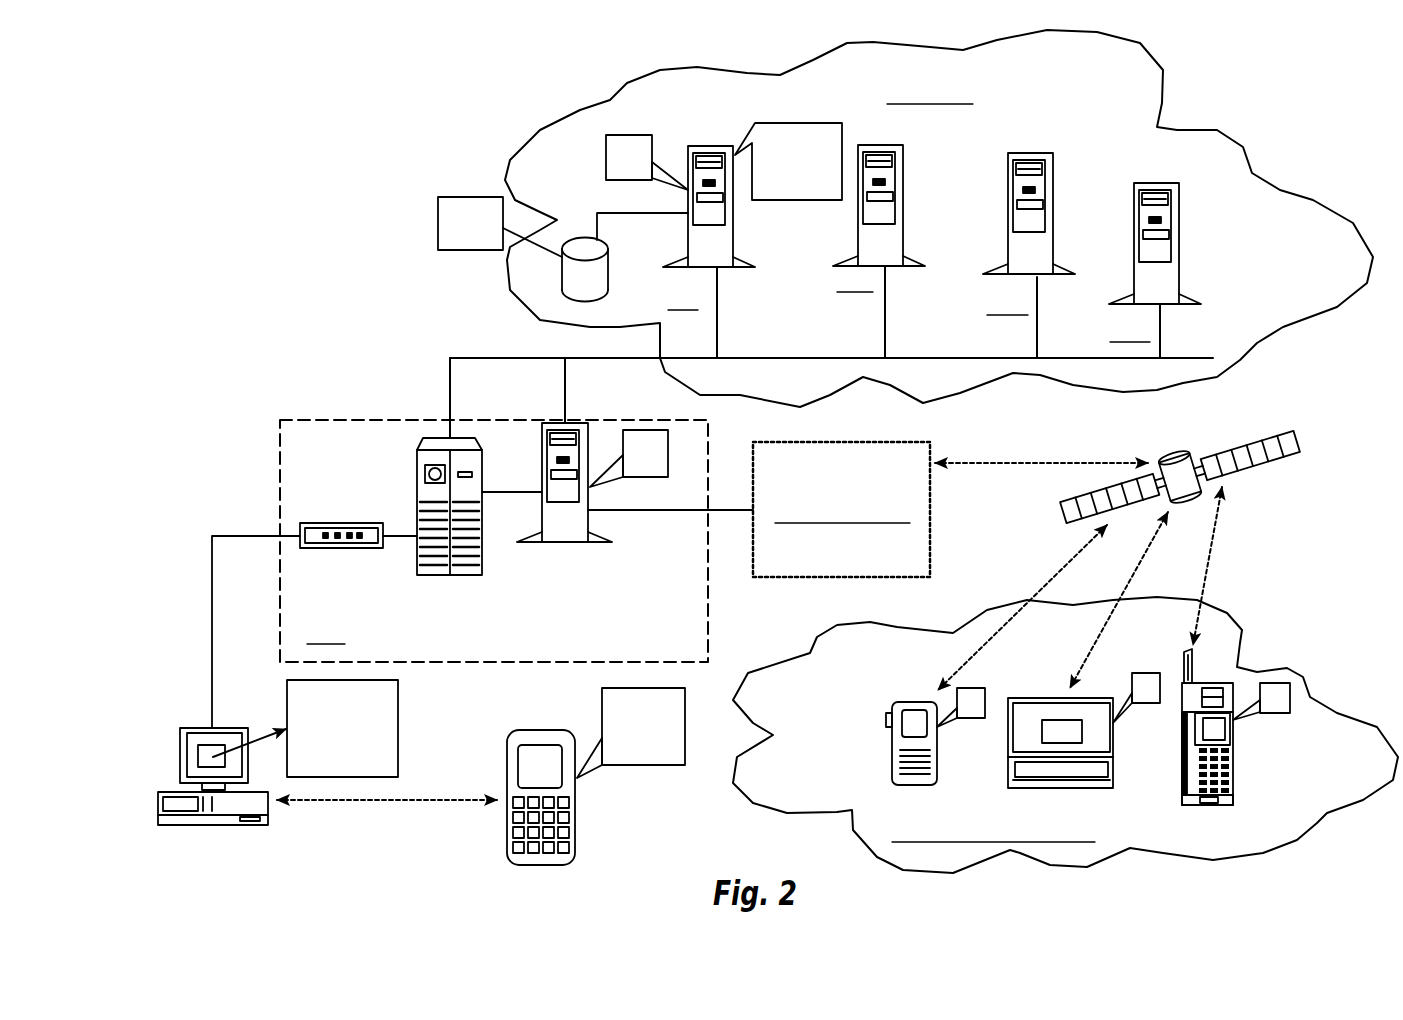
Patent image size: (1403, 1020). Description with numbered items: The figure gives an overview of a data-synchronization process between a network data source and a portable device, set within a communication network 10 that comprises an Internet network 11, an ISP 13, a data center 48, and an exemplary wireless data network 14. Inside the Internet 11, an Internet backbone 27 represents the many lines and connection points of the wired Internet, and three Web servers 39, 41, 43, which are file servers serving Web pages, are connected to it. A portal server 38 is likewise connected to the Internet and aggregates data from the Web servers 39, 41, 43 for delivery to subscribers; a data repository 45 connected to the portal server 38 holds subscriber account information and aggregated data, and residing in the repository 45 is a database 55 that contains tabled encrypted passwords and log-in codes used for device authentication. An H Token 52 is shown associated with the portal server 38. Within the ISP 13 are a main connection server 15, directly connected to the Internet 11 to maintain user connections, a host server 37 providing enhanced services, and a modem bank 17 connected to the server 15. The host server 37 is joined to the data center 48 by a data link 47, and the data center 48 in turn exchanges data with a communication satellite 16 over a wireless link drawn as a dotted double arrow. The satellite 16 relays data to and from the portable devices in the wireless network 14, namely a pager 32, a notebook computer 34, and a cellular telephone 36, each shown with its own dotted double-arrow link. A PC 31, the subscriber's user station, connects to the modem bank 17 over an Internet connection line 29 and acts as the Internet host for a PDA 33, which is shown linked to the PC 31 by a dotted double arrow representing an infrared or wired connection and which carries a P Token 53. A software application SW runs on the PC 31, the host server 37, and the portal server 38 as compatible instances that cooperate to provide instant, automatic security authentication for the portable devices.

The communication network 10 is at (350, 215).
The Internet network 11 is at (1252, 152).
The ISP 13 is at (280, 505).
The wireless data network 14 is at (1340, 662).
The main connection server 15 is at (417, 497).
The communication satellite 16 is at (1303, 441).
The modem bank 17 is at (363, 523).
The Internet backbone 27 is at (817, 357).
The Internet connection line 29 is at (212, 653).
The PC 31 is at (180, 755).
The pager 32 is at (892, 760).
The PDA 33 is at (575, 803).
The notebook computer 34 is at (1008, 727).
The cellular telephone 36 is at (1233, 733).
The host server 37 is at (542, 478).
The portal server 38 is at (688, 237).
The Web server 39 is at (903, 172).
The Web server 41 is at (1008, 233).
The Web server 43 is at (1180, 238).
The data repository 45 is at (562, 272).
The data link 47 is at (697, 510).
The data center 48 is at (930, 497).
The host token (H Token) 52 is at (793, 123).
The portable token (P Token) 53 is at (602, 730).
The database 55 is at (481, 250).